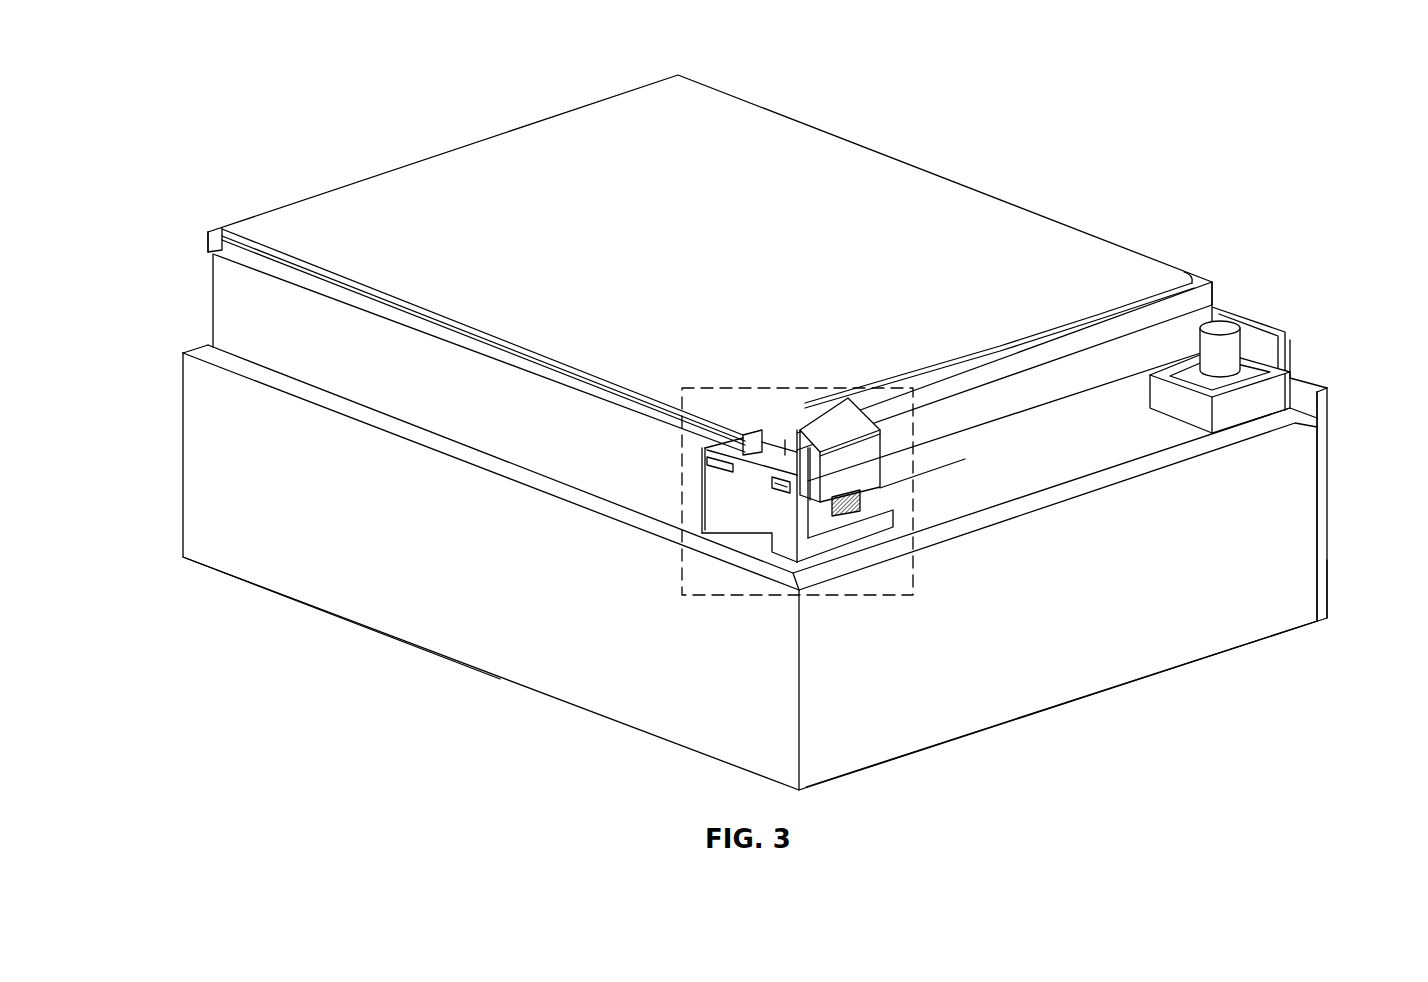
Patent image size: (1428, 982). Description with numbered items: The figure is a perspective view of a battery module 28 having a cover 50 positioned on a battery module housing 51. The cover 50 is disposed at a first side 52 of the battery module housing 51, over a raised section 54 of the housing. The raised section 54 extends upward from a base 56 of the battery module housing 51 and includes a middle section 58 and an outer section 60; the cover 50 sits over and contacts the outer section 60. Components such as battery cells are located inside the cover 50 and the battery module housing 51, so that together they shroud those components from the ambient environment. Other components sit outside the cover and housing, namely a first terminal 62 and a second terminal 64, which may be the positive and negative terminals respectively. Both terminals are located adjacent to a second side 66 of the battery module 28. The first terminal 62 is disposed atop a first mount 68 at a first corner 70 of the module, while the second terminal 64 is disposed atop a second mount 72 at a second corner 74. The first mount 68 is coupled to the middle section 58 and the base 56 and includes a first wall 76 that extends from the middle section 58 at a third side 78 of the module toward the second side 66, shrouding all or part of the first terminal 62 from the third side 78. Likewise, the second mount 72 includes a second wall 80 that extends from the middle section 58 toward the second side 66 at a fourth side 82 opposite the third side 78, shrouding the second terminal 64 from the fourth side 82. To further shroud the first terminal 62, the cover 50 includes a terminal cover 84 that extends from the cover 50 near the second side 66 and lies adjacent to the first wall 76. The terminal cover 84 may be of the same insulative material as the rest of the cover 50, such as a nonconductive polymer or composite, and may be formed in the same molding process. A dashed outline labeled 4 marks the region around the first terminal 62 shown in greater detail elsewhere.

The battery module 28 is at (1300, 147).
The cover 50 is at (860, 172).
The battery module housing 51 is at (1343, 397).
The first side 52 is at (1168, 255).
The raised section 54 is at (170, 301).
The base 56 is at (220, 467).
The middle section 58 is at (270, 312).
The outer section 60 is at (222, 245).
The first terminal 62 is at (885, 505).
The second terminal 64 is at (1220, 350).
The second side 66 is at (1237, 657).
The first mount 68 is at (848, 536).
The first corner 70 is at (790, 580).
The second mount 72 is at (1183, 403).
The second corner 74 is at (1333, 437).
The first wall 76 is at (747, 480).
The third side 78 is at (475, 625).
The second wall 80 is at (1250, 342).
The fourth side 82 is at (1308, 360).
The terminal cover 84 is at (822, 428).
The section view indicator 4 is at (878, 598).